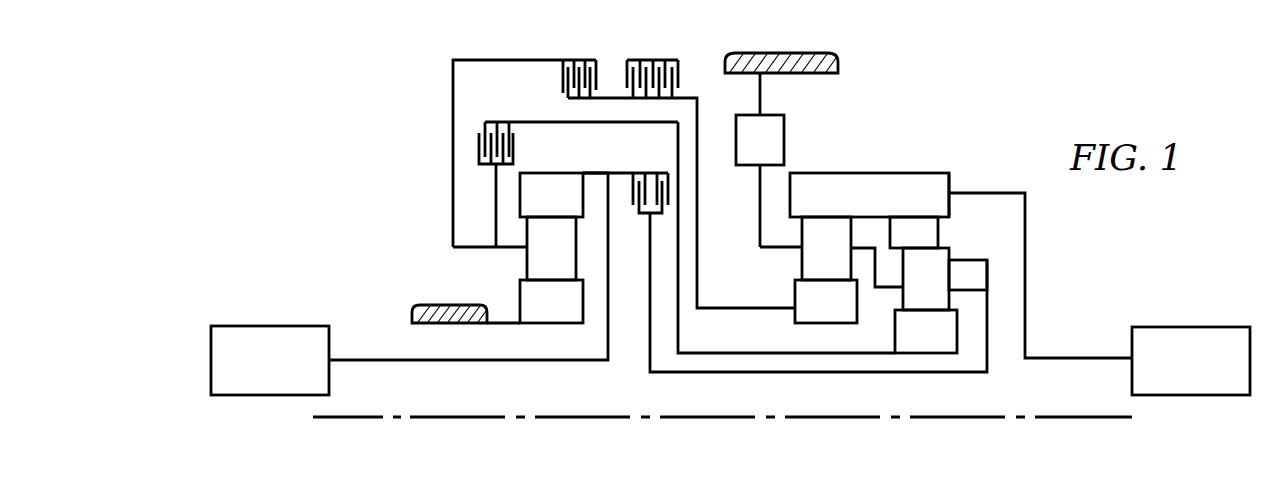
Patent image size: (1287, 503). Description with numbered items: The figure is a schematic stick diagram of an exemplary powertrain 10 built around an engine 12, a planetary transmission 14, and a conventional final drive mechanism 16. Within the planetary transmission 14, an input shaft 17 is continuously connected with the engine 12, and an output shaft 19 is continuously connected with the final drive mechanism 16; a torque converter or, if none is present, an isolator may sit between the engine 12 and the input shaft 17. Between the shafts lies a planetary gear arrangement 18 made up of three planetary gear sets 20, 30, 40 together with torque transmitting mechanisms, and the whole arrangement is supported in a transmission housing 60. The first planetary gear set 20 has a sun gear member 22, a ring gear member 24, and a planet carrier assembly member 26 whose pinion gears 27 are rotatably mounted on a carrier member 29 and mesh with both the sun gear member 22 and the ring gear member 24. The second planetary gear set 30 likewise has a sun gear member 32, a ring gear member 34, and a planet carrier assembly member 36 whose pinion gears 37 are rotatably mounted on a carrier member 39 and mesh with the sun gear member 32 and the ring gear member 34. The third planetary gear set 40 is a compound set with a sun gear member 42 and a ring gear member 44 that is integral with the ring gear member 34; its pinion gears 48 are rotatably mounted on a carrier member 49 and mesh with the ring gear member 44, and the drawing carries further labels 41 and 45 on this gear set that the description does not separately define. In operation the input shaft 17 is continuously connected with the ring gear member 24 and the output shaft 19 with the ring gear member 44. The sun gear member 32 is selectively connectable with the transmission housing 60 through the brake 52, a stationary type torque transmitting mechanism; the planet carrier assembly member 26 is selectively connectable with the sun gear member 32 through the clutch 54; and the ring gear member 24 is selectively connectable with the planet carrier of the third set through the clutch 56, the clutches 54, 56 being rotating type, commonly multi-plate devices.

The powertrain 10 is at (322, 163).
The engine 12 is at (268, 304).
The planetary transmission 14 is at (905, 73).
The final drive mechanism 16 is at (1198, 328).
The input shaft 17 is at (385, 360).
The planetary gear arrangement 18 is at (940, 96).
The output shaft 19 is at (1079, 361).
The first planetary gear set 20 is at (509, 279).
The sun gear member 22 is at (560, 325).
The ring gear member 24 is at (520, 190).
The planet carrier assembly member 26 is at (525, 235).
The pinion gears 27 is at (487, 284).
The carrier member 29 is at (503, 248).
The second planetary gear set 30 is at (828, 260).
The sun gear member 32 is at (840, 324).
The ring gear member 34 is at (825, 173).
The planet carrier assembly member 36 is at (801, 242).
The pinion gears 37 is at (760, 282).
The carrier member 39 is at (780, 248).
The third planetary gear set 40 is at (970, 260).
The third pinion gears 41 is at (952, 291).
The sun gear member 42 is at (940, 354).
The ring gear member 44 is at (920, 173).
The third planet carrier member 45 is at (966, 252).
The pinion gears 48 is at (938, 230).
The carrier member 49 is at (982, 261).
The brake 52 is at (680, 72).
The clutch 54 is at (563, 77).
The clutch 56 is at (649, 222).
The transmission housing 60 is at (425, 305).